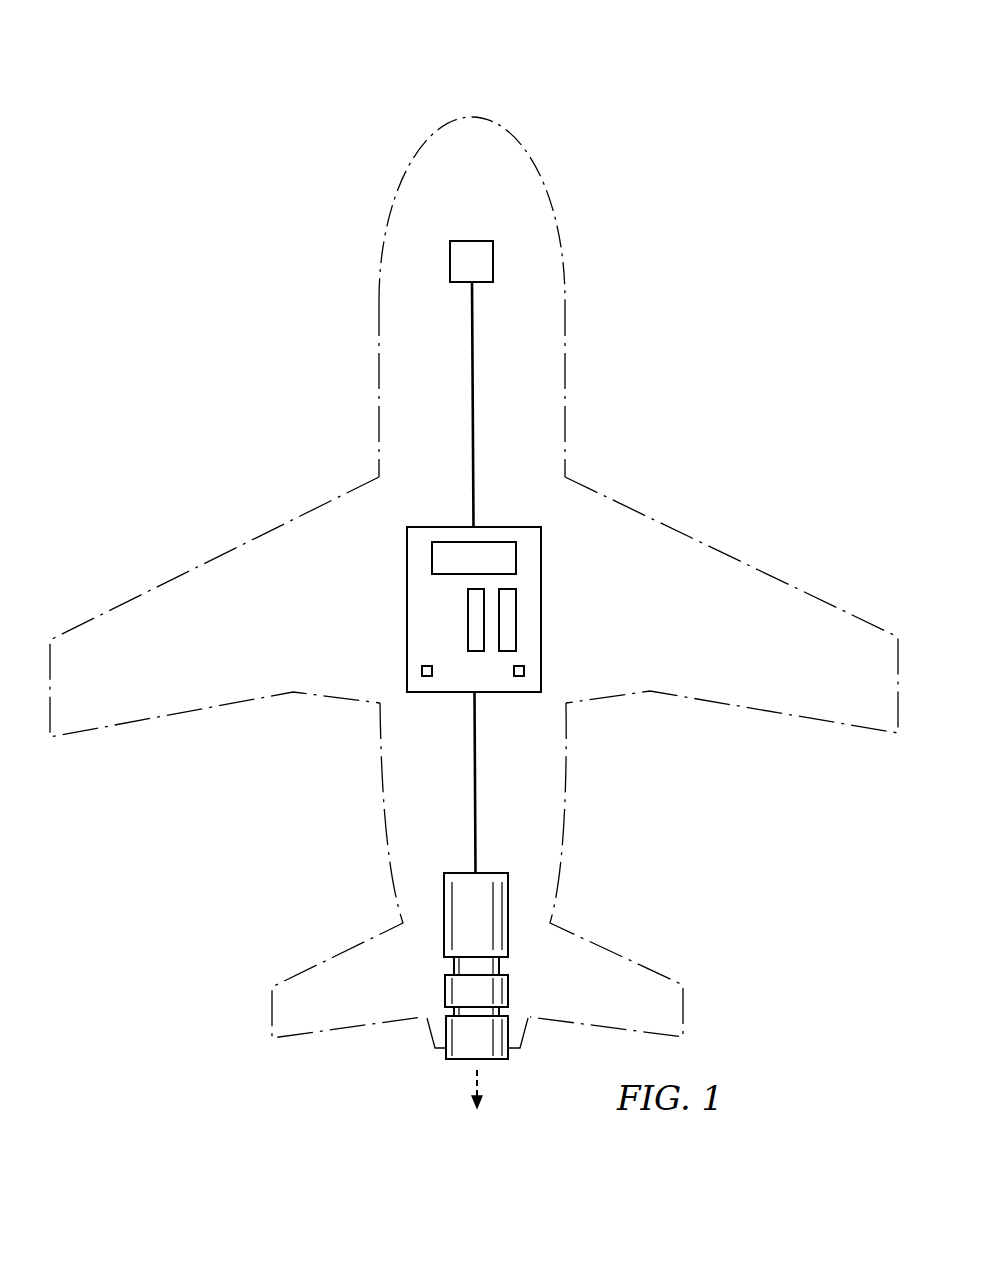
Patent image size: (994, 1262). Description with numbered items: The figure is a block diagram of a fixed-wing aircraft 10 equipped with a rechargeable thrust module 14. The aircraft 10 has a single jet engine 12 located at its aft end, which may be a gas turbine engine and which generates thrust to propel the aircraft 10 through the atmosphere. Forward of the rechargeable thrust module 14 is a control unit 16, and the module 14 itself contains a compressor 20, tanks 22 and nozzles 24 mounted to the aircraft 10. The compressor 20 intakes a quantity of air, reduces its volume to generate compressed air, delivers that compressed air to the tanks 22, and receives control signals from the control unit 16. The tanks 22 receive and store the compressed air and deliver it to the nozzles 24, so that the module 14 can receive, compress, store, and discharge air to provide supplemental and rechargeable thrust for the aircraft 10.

The aircraft 10 is at (557, 69).
The jet engine 12 is at (424, 965).
The rechargeable thrust module 14 is at (407, 655).
The control unit 16 is at (470, 241).
The compressor 20 is at (432, 558).
The tanks 22 is at (468, 620).
The nozzles 24 is at (433, 670).